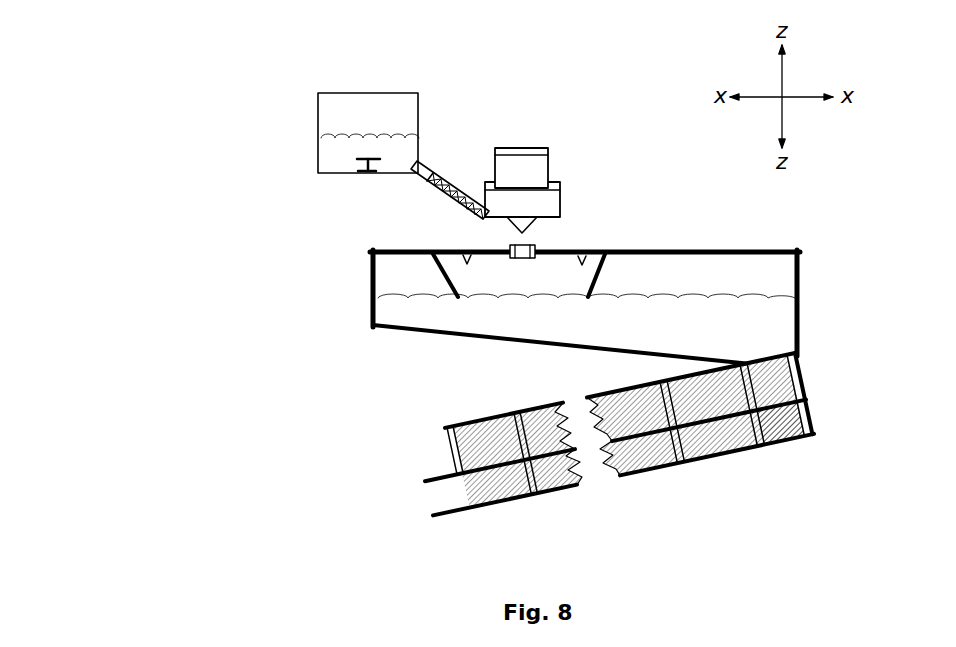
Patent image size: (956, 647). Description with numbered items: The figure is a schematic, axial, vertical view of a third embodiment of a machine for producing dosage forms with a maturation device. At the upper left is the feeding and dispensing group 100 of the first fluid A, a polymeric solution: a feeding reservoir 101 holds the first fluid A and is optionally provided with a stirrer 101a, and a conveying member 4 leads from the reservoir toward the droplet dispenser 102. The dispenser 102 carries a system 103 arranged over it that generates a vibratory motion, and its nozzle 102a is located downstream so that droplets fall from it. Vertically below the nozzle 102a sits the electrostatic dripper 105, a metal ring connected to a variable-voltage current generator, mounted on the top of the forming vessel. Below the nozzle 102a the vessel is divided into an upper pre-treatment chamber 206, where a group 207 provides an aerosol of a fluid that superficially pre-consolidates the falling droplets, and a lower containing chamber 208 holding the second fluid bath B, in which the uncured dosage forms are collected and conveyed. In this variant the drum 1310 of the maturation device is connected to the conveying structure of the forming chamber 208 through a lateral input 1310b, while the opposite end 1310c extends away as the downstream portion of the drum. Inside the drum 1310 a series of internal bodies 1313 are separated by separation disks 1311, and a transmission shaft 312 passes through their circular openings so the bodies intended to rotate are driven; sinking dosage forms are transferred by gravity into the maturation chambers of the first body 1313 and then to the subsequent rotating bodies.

The feeding and dispensing group 100 is at (450, 102).
The feeding reservoir 101 is at (307, 133).
The stirrer 101a is at (342, 161).
The conveying boom 4 is at (405, 182).
The droplet dispenser 102 is at (563, 158).
The vibratory motion generating system 103 is at (535, 128).
The nozzle 102a is at (498, 225).
The electrostatic dripper 105 is at (545, 243).
The pre-treatment chamber 206 is at (303, 233).
The bath containing chamber 208 is at (303, 285).
The aerosol providing group 207 is at (577, 263).
The drum 1310 is at (645, 477).
The lateral input 1310b is at (765, 353).
The conveyor belt outlet end 1310c is at (410, 498).
The separation disk 1311 is at (680, 447).
The transmission shaft 312 is at (717, 423).
The internal body 1313 is at (782, 427).